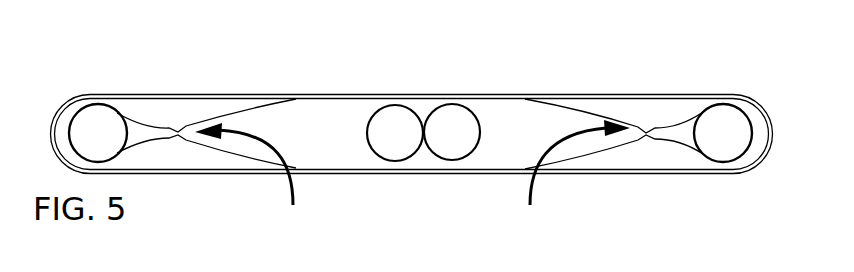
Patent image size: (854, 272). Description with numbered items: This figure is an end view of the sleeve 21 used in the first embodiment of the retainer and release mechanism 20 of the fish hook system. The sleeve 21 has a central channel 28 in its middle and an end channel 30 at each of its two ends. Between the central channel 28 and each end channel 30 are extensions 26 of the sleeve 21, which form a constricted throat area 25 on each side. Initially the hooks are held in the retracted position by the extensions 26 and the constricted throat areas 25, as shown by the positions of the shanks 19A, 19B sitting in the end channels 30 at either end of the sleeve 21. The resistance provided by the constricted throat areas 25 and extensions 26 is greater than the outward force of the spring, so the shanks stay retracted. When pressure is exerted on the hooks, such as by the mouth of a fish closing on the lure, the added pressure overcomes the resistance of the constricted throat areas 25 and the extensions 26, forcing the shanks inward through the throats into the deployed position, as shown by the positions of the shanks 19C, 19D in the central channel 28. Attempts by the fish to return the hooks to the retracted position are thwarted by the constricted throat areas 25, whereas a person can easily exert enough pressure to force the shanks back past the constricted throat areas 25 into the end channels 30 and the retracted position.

The shank 19A is at (79, 145).
The shank 19B is at (704, 145).
The shank 19C is at (376, 145).
The shank 19D is at (433, 144).
The retainer and release mechanism 20 is at (412, 173).
The sleeve 21 is at (484, 92).
The constricted throat area 25 is at (412, 179).
The extension 26 is at (190, 127).
The central channel 28 is at (402, 96).
The end channel 30 is at (99, 95).